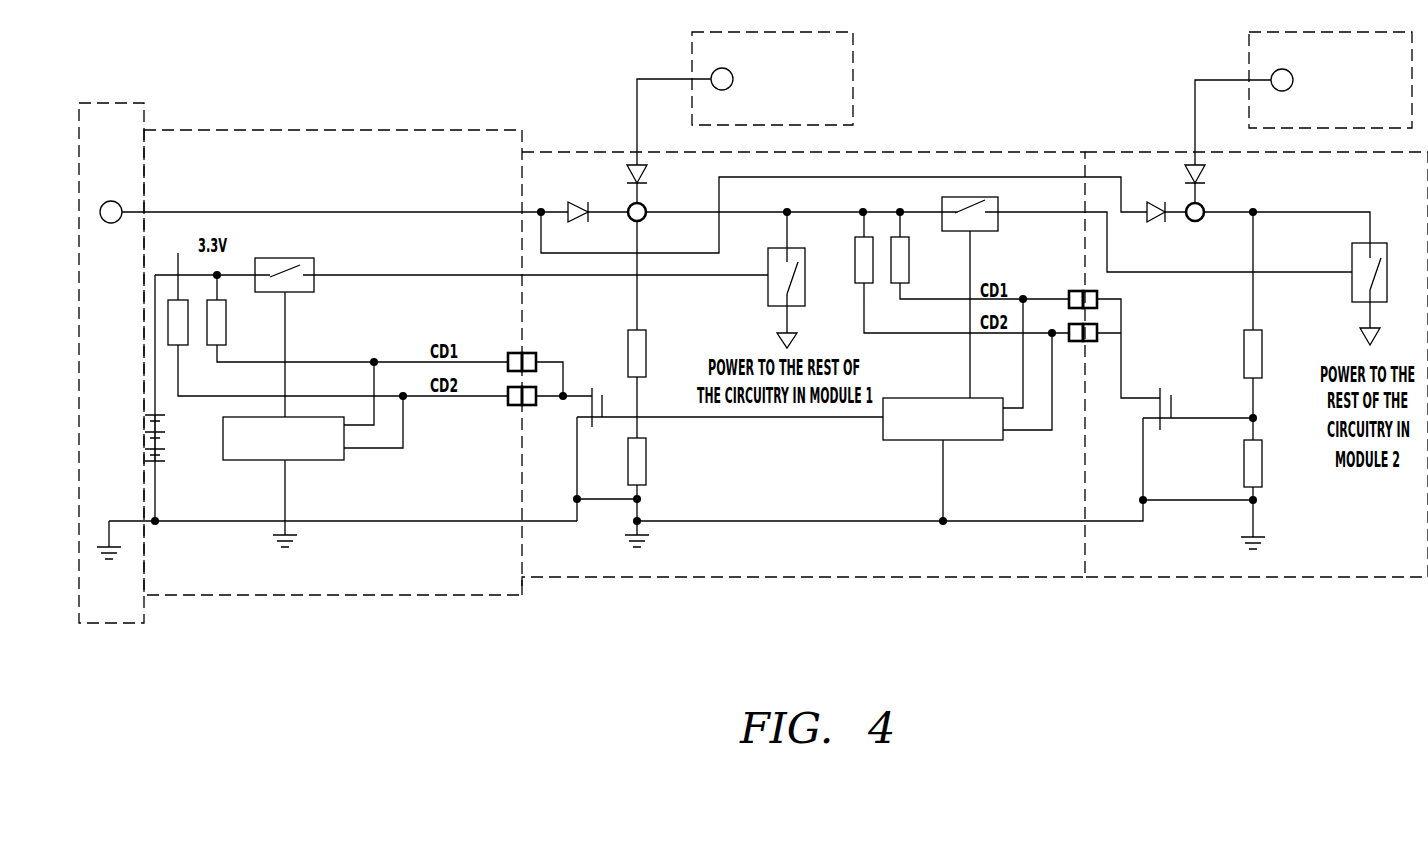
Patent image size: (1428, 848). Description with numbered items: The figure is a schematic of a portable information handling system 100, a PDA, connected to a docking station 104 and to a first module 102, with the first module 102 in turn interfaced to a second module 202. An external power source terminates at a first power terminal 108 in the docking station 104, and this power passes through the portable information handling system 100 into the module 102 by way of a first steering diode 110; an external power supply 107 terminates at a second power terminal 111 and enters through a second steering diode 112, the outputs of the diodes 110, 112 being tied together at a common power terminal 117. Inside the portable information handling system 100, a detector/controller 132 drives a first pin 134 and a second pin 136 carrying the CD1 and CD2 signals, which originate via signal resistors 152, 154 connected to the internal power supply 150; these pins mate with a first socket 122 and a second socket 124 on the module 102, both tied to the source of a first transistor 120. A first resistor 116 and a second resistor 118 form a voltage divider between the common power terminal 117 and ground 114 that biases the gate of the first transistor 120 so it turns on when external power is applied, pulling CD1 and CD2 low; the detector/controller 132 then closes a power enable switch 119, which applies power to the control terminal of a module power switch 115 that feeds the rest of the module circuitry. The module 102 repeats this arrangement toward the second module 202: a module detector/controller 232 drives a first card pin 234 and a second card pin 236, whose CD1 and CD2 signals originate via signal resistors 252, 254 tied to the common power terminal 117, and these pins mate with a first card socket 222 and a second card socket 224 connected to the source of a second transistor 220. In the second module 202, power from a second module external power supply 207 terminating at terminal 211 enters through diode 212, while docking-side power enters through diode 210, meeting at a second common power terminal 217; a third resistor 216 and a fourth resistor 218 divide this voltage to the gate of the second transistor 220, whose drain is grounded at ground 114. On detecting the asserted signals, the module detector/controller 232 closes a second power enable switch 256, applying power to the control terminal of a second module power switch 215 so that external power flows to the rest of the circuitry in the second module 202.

The portable information handling system 100 is at (198, 589).
The module 102 is at (803, 384).
The docking station 104 is at (120, 616).
The external power supply 107 is at (840, 117).
The first power terminal 108 is at (116, 198).
The first steering diode 110 is at (583, 197).
The second power terminal 111 is at (728, 66).
The second steering diode 112 is at (659, 177).
The ground 114 is at (701, 528).
The module power switch 115 is at (765, 298).
The first resistor 116 is at (660, 353).
The common power terminal 117 is at (656, 221).
The second resistor 118 is at (659, 461).
The power enable switch 119 is at (284, 263).
The first transistor 120 is at (598, 394).
The first socket 122 is at (533, 353).
The second socket 124 is at (530, 405).
The detector/controller 132 is at (289, 453).
The first pin 134 is at (512, 353).
The second pin 136 is at (512, 405).
The internal power supply 150 is at (167, 449).
The signal resistor 152 is at (167, 323).
The signal resistor 154 is at (226, 323).
The second module 202 is at (1256, 386).
The second module external power supply 207 is at (1398, 122).
The second module docking voltage diode 210 is at (1155, 200).
The second module external power terminal 211 is at (1287, 68).
The second module external voltage diode 212 is at (1221, 178).
The second module power switch 215 is at (1348, 294).
The third resistor 216 is at (1230, 354).
The second common power terminal 217 is at (1213, 223).
The fourth resistor 218 is at (1230, 463).
The second transistor 220 is at (1163, 396).
The first card socket 222 is at (1100, 297).
The second card socket 224 is at (1098, 329).
The module detector/controller 232 is at (947, 435).
The first card pin 234 is at (1077, 292).
The second card pin 236 is at (1068, 333).
The signal resistor 252 is at (875, 277).
The signal resistor 254 is at (911, 247).
The second power enable switch 256 is at (968, 197).